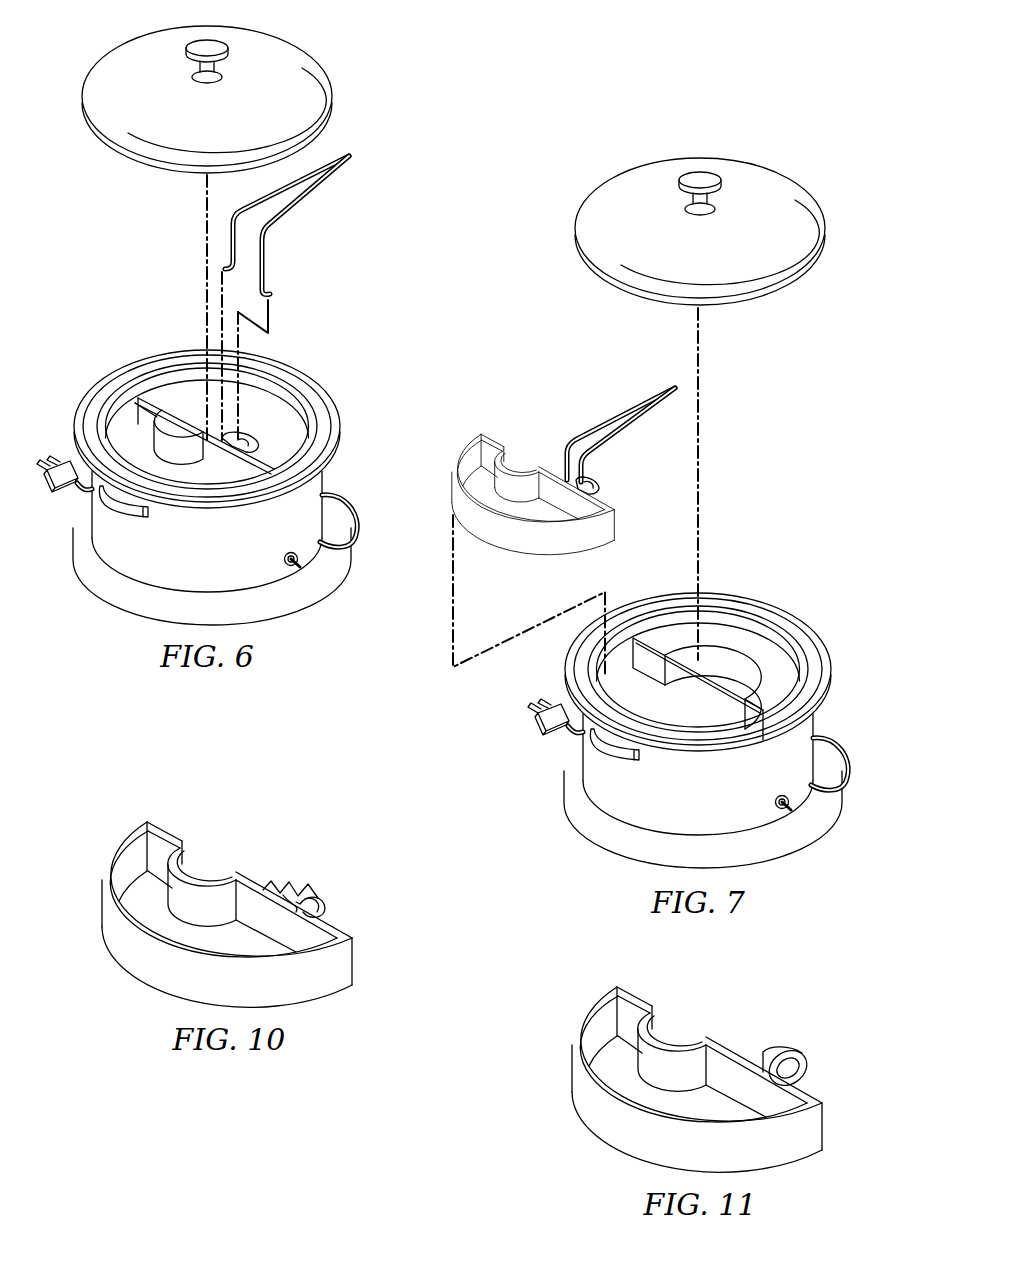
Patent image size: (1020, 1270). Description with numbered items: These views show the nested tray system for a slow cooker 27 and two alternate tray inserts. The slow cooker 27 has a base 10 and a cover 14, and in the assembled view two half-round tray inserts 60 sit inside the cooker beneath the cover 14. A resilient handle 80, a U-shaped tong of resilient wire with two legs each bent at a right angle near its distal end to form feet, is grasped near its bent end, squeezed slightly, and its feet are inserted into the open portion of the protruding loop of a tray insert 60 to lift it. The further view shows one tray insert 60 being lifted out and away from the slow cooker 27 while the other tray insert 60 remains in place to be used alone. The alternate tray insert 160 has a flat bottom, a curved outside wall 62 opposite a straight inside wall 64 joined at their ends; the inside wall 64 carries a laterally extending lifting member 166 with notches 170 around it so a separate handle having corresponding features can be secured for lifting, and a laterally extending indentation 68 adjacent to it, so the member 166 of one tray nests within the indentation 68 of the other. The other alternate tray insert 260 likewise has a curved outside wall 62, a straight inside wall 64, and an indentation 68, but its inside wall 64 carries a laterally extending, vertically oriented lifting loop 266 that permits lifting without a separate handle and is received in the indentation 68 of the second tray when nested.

In FIG. 6, the slow cooker 27 is at (208, 312).
In FIG. 7, the slow cooker 27 is at (661, 470).
In FIG. 6, the cover 14 is at (122, 62).
In FIG. 7, the cover 14 is at (785, 196).
In FIG. 6, the resilient handle 80 is at (306, 192).
In FIG. 7, the resilient handle 80 is at (624, 412).
In FIG. 6, the tray insert 60 is at (262, 432).
In FIG. 7, the tray insert 60 is at (533, 557).
In FIG. 6, the base 10 is at (327, 481).
In FIG. 7, the base 10 is at (815, 729).
In FIG. 10, the tray insert 160 is at (208, 912).
In FIG. 10, the curved outside wall 62 is at (148, 966).
In FIG. 11, the curved outside wall 62 is at (696, 1079).
In FIG. 10, the laterally extending indentation 68 is at (208, 874).
In FIG. 11, the laterally extending indentation 68 is at (672, 1042).
In FIG. 10, the notches 170 is at (324, 867).
In FIG. 10, the laterally extending lifting member 166 is at (322, 894).
In FIG. 10, the straight inside wall 64 is at (292, 932).
In FIG. 11, the straight inside wall 64 is at (724, 1076).
In FIG. 11, the tray insert 260 is at (682, 1079).
In FIG. 11, the lifting loop 266 is at (800, 1063).